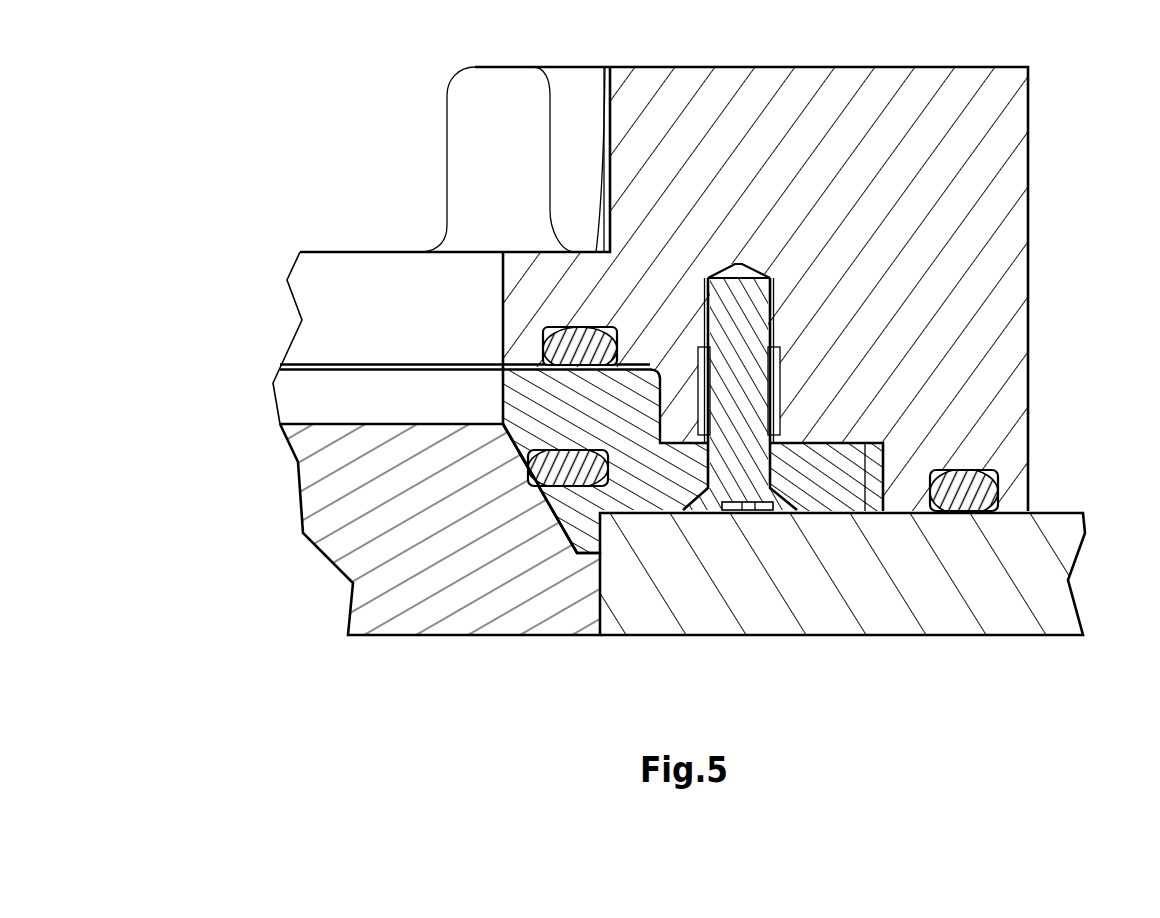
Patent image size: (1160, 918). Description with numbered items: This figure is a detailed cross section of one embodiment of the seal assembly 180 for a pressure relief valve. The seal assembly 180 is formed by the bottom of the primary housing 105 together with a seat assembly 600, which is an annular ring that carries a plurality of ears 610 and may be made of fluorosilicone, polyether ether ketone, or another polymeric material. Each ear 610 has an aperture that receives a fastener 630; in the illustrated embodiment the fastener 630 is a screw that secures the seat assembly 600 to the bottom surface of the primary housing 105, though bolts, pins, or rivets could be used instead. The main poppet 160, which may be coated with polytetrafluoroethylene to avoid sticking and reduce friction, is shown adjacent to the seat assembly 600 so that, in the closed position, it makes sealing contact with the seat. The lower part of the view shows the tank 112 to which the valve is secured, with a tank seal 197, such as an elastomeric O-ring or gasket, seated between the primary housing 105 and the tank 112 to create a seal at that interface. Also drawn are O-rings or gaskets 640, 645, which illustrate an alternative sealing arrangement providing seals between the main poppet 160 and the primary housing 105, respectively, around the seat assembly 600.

The seal assembly 180 is at (308, 169).
The primary housing 105 is at (968, 405).
The main poppet 160 is at (423, 532).
The tank 112 is at (873, 602).
The seat assembly 600 is at (547, 396).
The ear 610 is at (828, 468).
The fastener 630 is at (738, 467).
The O-ring or gasket 640 is at (585, 475).
The O-ring or gasket 645 is at (572, 345).
The tank seal 197 is at (1000, 495).